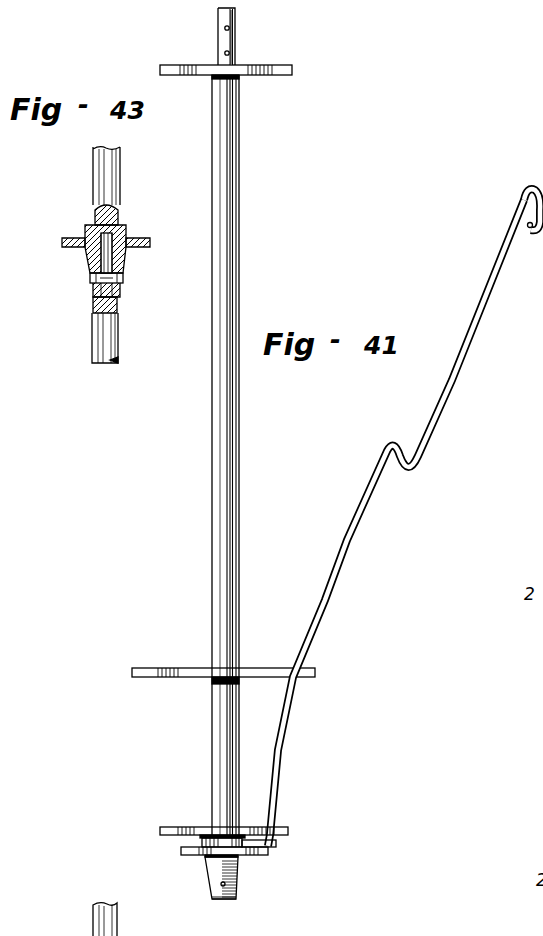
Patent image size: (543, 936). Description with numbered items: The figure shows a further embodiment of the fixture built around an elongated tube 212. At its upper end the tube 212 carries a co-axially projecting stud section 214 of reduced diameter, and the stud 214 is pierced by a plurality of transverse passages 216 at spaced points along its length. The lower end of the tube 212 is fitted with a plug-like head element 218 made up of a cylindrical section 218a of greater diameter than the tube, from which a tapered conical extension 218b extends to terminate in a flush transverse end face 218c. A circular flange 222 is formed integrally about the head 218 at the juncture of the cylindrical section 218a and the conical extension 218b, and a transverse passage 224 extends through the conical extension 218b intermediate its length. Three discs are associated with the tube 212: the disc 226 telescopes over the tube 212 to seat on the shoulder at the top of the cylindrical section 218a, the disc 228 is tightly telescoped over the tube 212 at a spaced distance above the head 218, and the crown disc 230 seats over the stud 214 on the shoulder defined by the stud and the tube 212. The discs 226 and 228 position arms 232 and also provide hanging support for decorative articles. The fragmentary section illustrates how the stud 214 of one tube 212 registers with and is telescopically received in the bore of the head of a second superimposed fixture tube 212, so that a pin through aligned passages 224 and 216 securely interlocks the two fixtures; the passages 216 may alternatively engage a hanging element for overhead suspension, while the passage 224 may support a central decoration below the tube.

In FIG. 43, the elongated tube 212 is at (118, 345).
In FIG. 41, the elongated tube 212 is at (239, 478).
In FIG. 41, the stud section 214 is at (236, 40).
In FIG. 41, the transverse passages 216 is at (224, 53).
In FIG. 41, the plug-like head element 218 is at (238, 870).
In FIG. 41, the cylindrical section 218a is at (277, 842).
In FIG. 41, the tapered conical extension 218b is at (236, 886).
In FIG. 41, the flush transverse end face 218c is at (229, 900).
In FIG. 41, the circular flange 222 is at (181, 851).
In FIG. 41, the transverse passage 224 is at (221, 885).
In FIG. 41, the disc 226 is at (288, 830).
In FIG. 41, the disc 228 is at (316, 675).
In FIG. 41, the crown disc 230 is at (292, 70).
In FIG. 41, the arms 232 is at (323, 617).